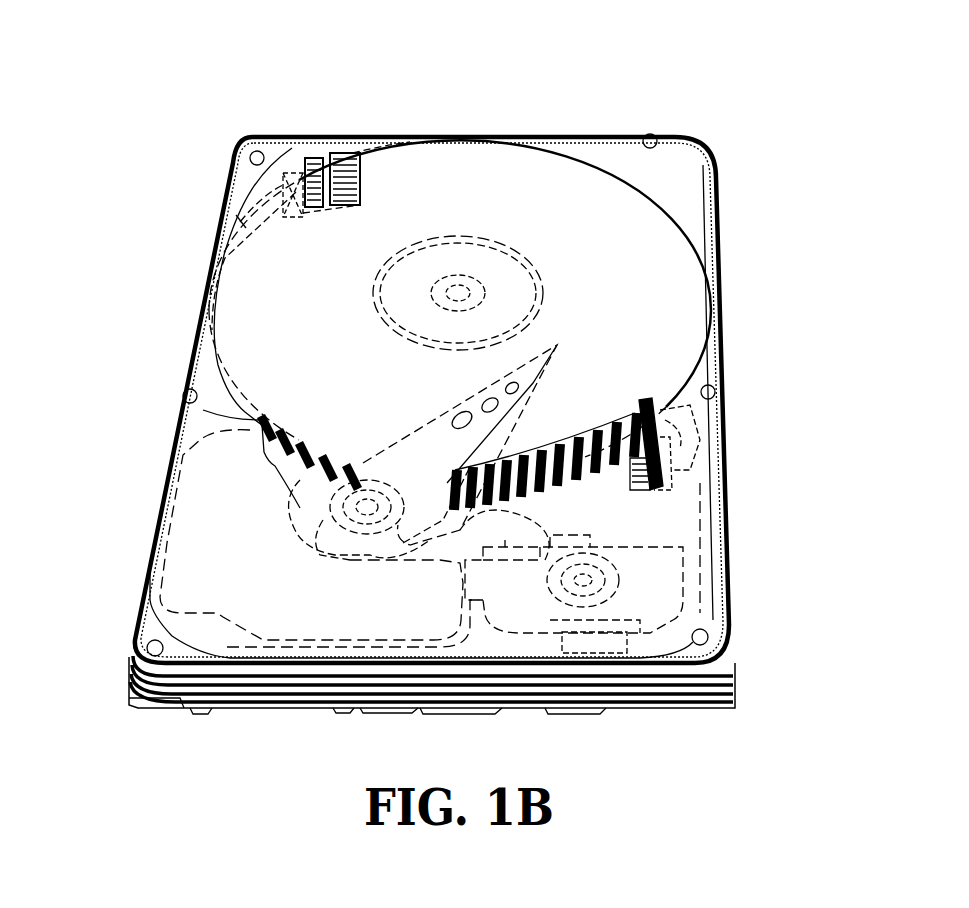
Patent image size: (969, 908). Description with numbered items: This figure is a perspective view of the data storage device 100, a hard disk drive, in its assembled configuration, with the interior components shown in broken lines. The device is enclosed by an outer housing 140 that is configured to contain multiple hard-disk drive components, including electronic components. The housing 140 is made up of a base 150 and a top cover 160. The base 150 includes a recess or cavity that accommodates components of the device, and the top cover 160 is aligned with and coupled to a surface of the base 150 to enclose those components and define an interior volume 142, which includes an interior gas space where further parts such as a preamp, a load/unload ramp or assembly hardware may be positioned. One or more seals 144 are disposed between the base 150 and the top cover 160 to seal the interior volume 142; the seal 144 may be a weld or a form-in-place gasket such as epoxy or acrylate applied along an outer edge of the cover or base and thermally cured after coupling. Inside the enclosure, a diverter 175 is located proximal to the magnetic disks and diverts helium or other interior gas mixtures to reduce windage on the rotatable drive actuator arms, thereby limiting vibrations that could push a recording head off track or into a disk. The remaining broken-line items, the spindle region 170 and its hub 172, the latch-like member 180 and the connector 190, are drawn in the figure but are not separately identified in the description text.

The data storage device 100 is at (256, 71).
The housing 140 is at (735, 713).
The interior volume 142 is at (650, 525).
The seal 144 is at (718, 230).
The base 150 is at (130, 683).
The top cover 160 is at (480, 214).
The spindle motor assembly 170 is at (672, 595).
The spindle motor 172 is at (560, 596).
The diverter 175 is at (335, 155).
The latch 180 is at (306, 160).
The connector 190 is at (589, 652).